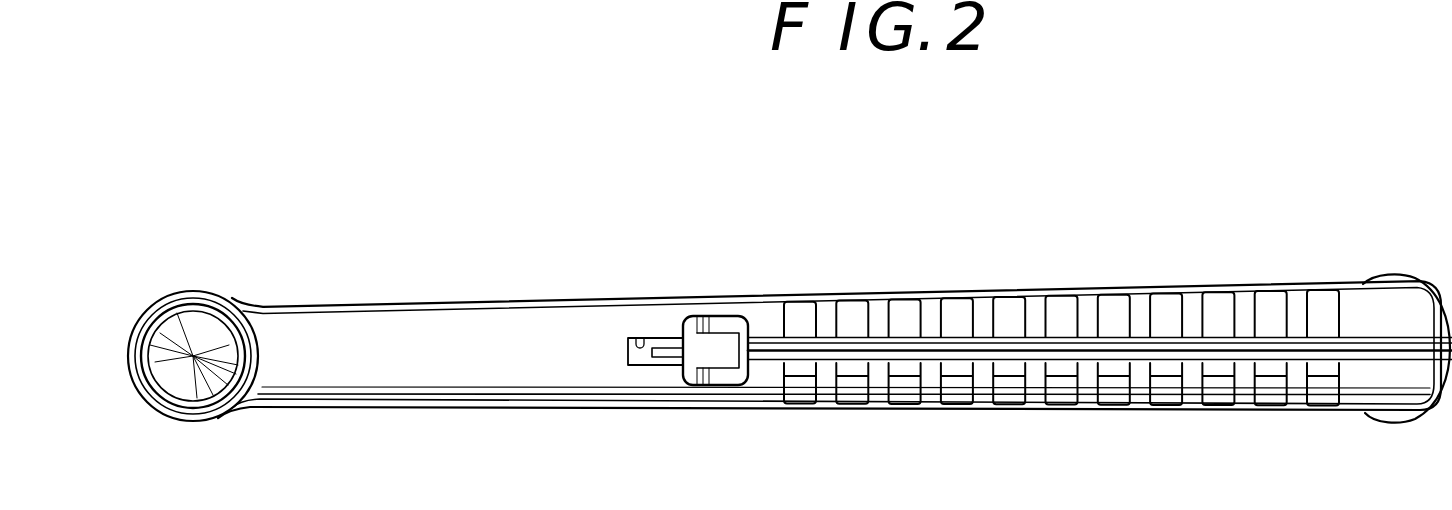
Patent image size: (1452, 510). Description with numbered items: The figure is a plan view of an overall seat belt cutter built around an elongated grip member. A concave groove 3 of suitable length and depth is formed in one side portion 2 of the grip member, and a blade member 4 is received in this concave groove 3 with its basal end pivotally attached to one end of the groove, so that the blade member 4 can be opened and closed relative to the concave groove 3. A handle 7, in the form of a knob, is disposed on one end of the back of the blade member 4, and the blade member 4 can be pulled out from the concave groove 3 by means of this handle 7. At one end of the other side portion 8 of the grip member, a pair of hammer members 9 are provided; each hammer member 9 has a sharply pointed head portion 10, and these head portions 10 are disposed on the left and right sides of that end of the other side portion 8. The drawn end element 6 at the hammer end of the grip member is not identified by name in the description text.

The one side portion 2 is at (1010, 298).
The concave groove 3 is at (638, 346).
The blade member 4 is at (883, 343).
The end cap 6 is at (1382, 273).
The handle 7 is at (720, 322).
The other side portion 8 is at (463, 312).
The hammer member 9 is at (170, 313).
The sharply pointed head portion 10 is at (200, 337).